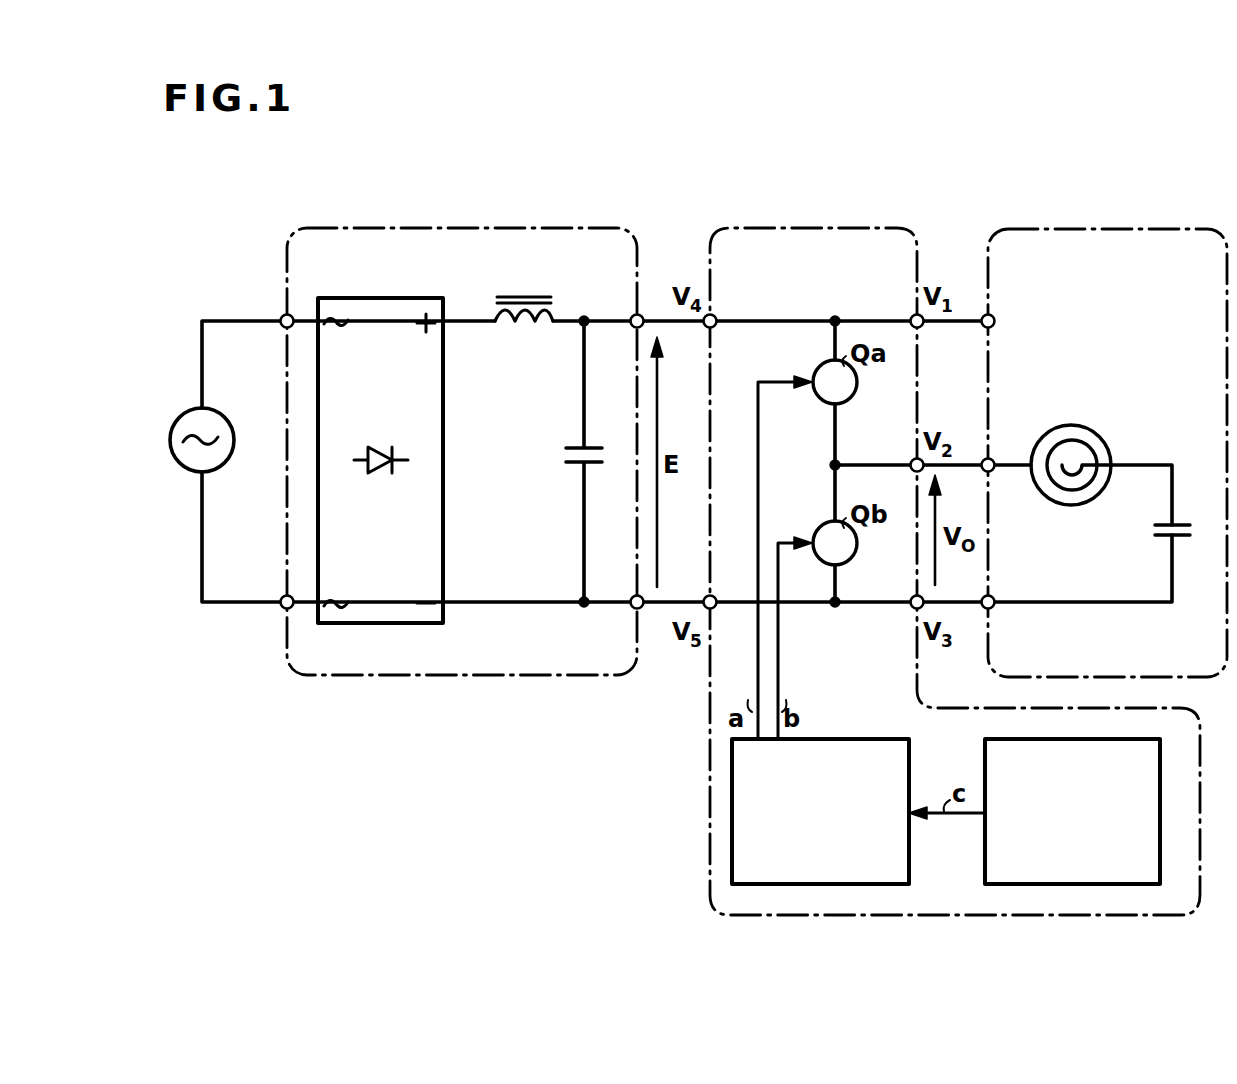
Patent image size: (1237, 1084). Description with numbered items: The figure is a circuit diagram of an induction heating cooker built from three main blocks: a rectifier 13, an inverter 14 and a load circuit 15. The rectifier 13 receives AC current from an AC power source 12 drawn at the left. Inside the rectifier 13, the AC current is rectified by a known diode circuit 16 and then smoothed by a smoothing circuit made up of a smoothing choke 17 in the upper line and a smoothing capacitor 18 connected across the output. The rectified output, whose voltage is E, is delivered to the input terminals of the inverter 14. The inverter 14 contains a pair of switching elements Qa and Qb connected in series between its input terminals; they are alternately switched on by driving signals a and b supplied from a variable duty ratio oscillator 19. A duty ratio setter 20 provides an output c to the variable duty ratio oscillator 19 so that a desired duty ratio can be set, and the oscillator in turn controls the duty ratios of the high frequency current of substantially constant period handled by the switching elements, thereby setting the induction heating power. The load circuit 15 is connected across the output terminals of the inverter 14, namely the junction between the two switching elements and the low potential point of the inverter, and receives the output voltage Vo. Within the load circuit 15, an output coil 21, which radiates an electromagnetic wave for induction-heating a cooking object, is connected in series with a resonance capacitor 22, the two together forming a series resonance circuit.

The AC power source 12 is at (188, 429).
The rectifier 13 is at (330, 228).
The inverter 14 is at (768, 228).
The load circuit 15 is at (1030, 229).
The diode circuit 16 is at (445, 605).
The smoothing choke 17 is at (522, 324).
The smoothing capacitor 18 is at (571, 465).
The variable duty ratio oscillator 19 is at (850, 739).
The duty ratio setter 20 is at (985, 762).
The output coil 21 is at (1090, 432).
The resonance capacitor 22 is at (1154, 535).